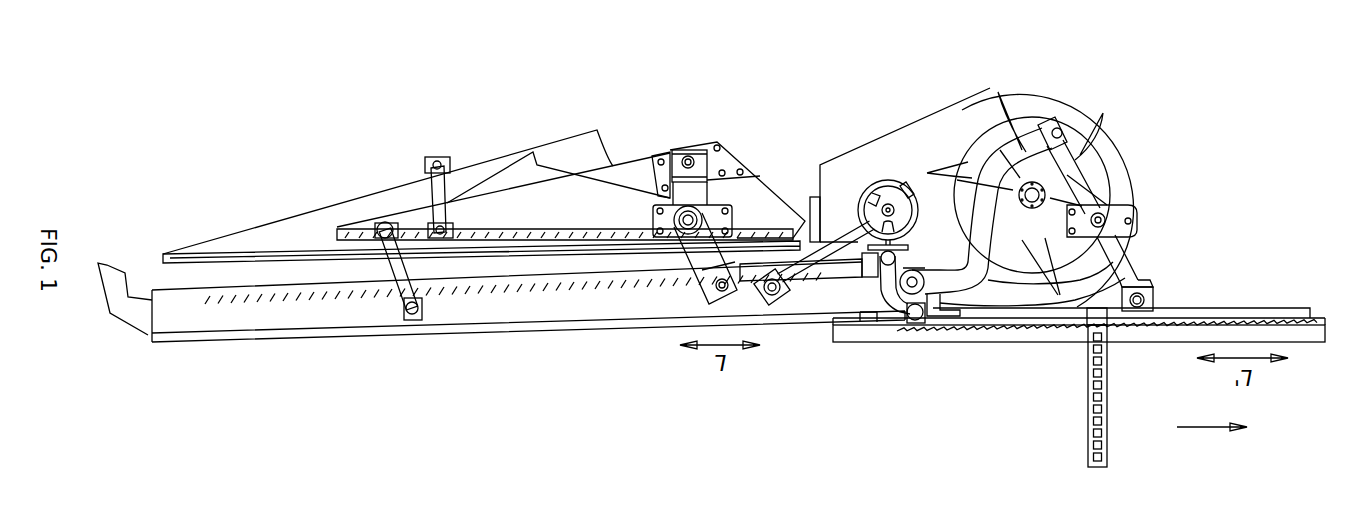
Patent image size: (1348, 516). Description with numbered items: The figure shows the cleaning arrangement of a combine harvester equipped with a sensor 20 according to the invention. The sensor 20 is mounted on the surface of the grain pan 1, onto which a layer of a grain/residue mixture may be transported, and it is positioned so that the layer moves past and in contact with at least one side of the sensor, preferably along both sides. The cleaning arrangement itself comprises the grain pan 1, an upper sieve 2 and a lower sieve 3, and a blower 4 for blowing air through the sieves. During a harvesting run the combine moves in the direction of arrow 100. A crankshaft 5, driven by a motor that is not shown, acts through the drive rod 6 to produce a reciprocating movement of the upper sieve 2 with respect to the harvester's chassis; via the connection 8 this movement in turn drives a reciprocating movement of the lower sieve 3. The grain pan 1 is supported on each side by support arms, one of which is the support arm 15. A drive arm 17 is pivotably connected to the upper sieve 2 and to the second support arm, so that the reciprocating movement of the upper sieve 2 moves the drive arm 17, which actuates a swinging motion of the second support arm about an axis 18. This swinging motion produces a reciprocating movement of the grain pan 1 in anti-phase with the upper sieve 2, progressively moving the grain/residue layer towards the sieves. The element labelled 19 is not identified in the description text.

The grain pan 1 is at (1017, 342).
The upper sieve 2 is at (340, 318).
The lower sieve 3 is at (352, 208).
The blower 4 is at (1007, 182).
The crankshaft 5 is at (888, 188).
The drive rod 6 is at (815, 262).
The connection 8 is at (705, 253).
The support arm 15 is at (887, 322).
The drive arm 17 is at (1000, 162).
The axis 18 is at (1113, 217).
The support arm 19 is at (1120, 263).
The sensor 20 is at (1088, 428).
The arrow 100 is at (1204, 440).